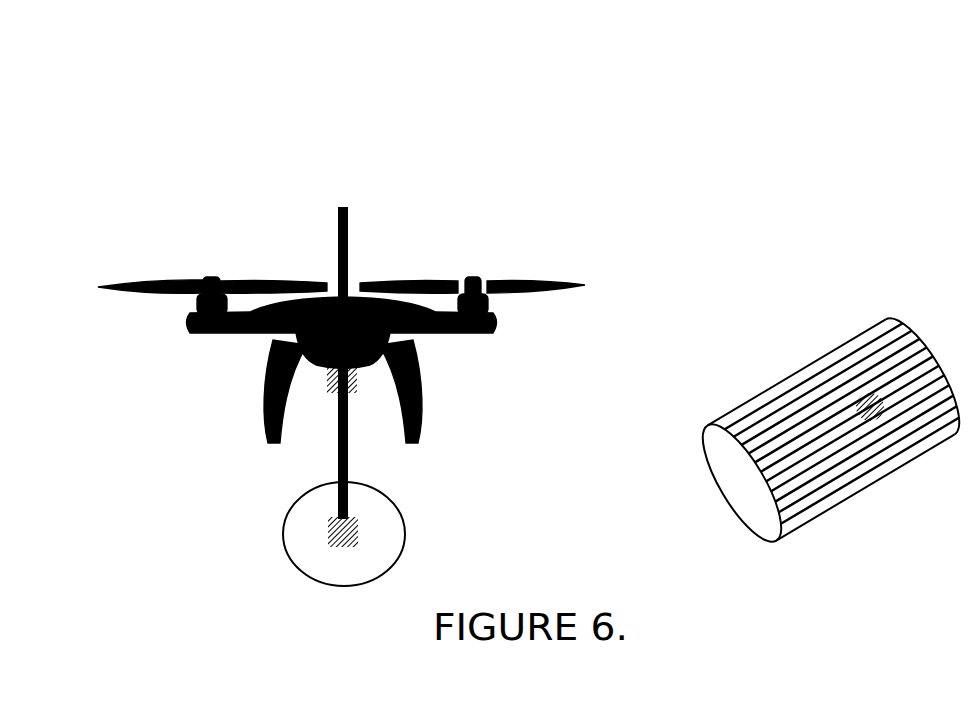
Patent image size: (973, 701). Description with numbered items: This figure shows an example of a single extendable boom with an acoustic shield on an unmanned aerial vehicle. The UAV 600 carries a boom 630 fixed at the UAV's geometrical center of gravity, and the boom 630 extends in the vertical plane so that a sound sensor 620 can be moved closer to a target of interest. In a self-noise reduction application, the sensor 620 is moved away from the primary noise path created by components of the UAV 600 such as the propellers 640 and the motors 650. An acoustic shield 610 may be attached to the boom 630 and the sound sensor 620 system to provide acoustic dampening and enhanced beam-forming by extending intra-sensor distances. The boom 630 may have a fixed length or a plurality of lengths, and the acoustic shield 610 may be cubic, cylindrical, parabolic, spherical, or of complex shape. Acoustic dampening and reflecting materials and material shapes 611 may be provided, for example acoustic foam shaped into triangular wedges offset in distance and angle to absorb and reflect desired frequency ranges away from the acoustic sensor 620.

The UAV 600 is at (168, 100).
The acoustic shield 610 is at (693, 485).
The acoustic dampening and reflecting material 611 is at (818, 370).
The sound sensor 620 is at (322, 395).
The boom 630 is at (360, 220).
The propellers 640 is at (160, 275).
The motors 650 is at (212, 267).